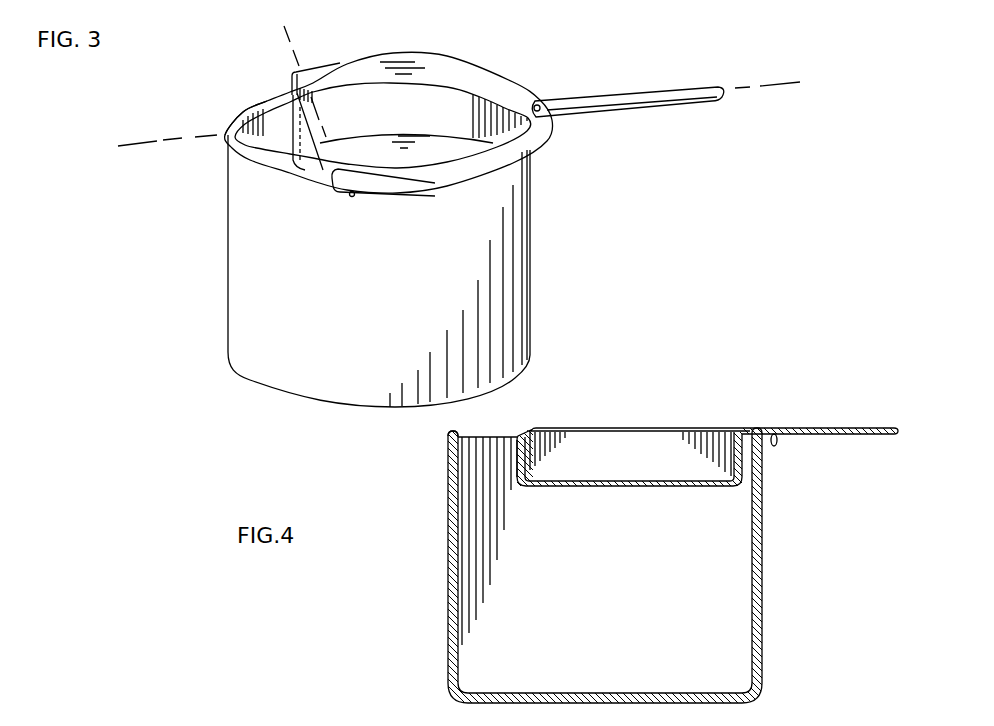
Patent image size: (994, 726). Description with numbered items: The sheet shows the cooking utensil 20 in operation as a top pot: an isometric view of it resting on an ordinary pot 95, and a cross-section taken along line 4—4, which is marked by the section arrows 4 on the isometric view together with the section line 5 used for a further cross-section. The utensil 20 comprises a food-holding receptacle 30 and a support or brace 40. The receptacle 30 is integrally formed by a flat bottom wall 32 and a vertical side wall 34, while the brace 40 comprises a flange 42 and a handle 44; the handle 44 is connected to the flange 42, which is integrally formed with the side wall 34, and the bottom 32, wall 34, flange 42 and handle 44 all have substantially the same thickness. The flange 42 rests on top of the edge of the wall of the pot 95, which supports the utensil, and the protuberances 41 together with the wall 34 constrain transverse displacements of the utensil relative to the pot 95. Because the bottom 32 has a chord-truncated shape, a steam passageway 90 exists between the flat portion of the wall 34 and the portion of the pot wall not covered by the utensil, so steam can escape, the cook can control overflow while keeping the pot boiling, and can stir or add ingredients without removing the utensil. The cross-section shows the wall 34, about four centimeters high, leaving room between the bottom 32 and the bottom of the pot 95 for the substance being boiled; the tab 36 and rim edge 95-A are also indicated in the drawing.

In FIG. 3, the cooking utensil 20 is at (452, 133).
In FIG. 4, the cooking utensil 20 is at (644, 495).
In FIG. 3, the food-holding receptacle 30 is at (491, 136).
In FIG. 4, the food-holding receptacle 30 is at (662, 446).
In FIG. 3, the flat bottom wall 32 is at (368, 157).
In FIG. 3, the vertical side wall 34 is at (295, 133).
In FIG. 4, the vertical side wall 34 is at (520, 465).
In FIG. 3, the clip tab 36 is at (318, 157).
In FIG. 4, the clip tab 36 is at (565, 432).
In FIG. 3, the support or brace 40 is at (586, 125).
In FIG. 3, the protuberances 41 is at (350, 195).
In FIG. 4, the protuberances 41 is at (774, 448).
In FIG. 3, the flange 42 is at (460, 173).
In FIG. 3, the handle 44 is at (657, 97).
In FIG. 4, the handle 44 is at (837, 435).
In FIG. 3, the steam passageway 90 is at (233, 127).
In FIG. 4, the steam passageway 90 is at (487, 457).
In FIG. 3, the pot 95 is at (262, 303).
In FIG. 4, the pot 95 is at (638, 537).
In FIG. 3, the container rim edge 95-A is at (250, 112).
In FIG. 4, the container rim edge 95-A is at (497, 435).
In FIG. 3, the section line 4— 4 is at (171, 152).
In FIG. 3, the section line 5— 5 is at (280, 43).